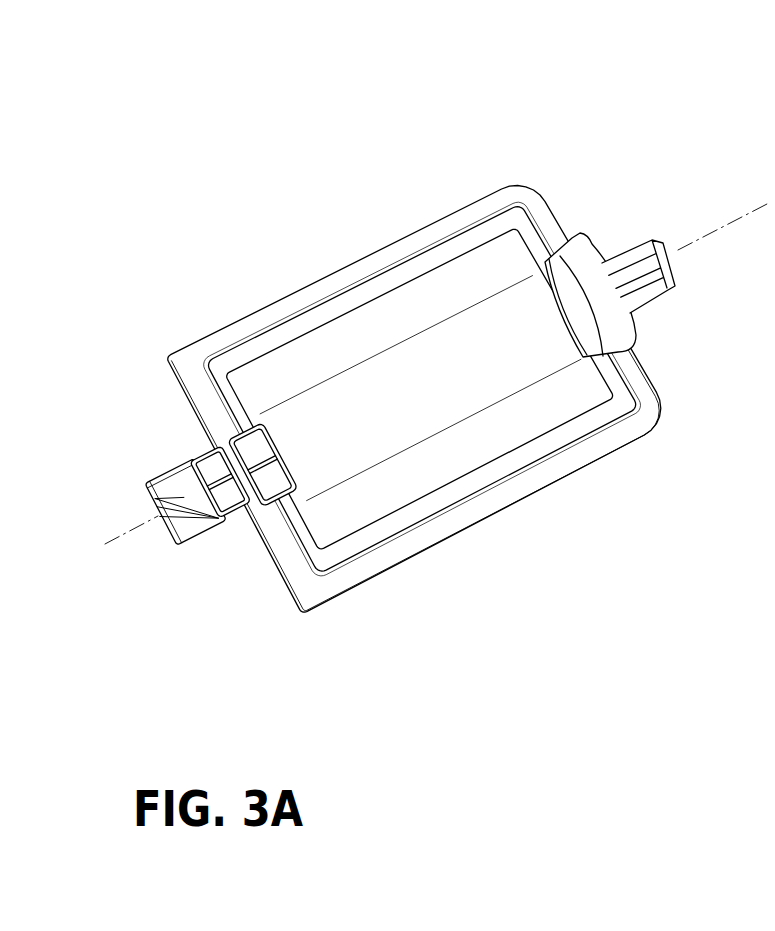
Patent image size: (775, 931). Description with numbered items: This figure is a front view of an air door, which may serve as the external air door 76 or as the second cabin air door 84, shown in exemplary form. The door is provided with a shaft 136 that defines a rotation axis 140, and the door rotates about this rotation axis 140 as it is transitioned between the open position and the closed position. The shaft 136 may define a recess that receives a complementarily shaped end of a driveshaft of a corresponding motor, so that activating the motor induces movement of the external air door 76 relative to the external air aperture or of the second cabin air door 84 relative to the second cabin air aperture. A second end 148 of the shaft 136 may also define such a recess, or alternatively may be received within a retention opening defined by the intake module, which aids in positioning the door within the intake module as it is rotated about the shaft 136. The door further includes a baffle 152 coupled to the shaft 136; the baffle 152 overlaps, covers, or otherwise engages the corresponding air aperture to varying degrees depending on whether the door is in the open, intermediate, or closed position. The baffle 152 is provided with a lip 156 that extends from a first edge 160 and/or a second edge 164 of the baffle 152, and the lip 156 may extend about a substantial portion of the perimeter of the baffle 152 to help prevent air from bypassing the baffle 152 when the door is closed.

The external air door 76 is at (436, 343).
The second cabin air door 84 is at (414, 343).
The shaft 136 is at (637, 252).
The rotation axis 140 is at (737, 220).
The second end 148 is at (195, 458).
The baffle 152 is at (405, 307).
The lip 156 is at (218, 342).
The first edge 160 is at (333, 303).
The second edge 164 is at (487, 482).